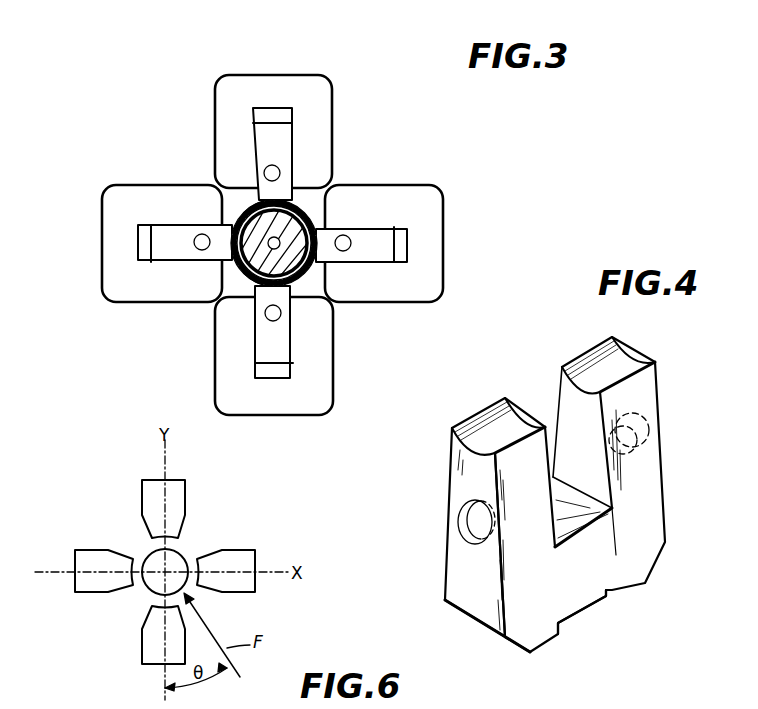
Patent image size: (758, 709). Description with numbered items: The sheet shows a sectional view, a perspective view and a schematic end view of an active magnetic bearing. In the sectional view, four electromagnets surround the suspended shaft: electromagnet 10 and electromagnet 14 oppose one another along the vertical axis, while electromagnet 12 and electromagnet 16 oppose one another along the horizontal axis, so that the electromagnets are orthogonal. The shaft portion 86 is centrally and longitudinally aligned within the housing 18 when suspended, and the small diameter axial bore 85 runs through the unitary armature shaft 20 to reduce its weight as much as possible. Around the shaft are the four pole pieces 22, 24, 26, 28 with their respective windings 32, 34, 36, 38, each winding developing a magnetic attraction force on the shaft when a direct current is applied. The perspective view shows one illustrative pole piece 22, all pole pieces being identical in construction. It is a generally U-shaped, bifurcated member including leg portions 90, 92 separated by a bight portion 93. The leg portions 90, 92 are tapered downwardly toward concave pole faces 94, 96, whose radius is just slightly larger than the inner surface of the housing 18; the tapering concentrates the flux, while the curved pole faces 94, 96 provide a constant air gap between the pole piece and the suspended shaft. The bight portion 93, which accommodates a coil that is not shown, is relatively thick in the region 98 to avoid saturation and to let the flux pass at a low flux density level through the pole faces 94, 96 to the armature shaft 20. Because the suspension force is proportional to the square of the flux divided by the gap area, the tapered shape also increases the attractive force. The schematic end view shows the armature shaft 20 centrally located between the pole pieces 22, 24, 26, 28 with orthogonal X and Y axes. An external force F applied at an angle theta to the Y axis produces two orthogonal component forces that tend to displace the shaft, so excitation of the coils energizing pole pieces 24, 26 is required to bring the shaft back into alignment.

In FIG. 3, the electromagnet 10 is at (268, 72).
In FIG. 3, the electromagnet 12 is at (448, 268).
In FIG. 3, the electromagnet 14 is at (275, 418).
In FIG. 3, the electromagnet 16 is at (101, 257).
In FIG. 3, the housing 18 is at (302, 210).
In FIG. 3, the armature shaft 20 is at (305, 278).
In FIG. 6, the armature shaft 20 is at (183, 553).
In FIG. 3, the pole piece 22 is at (283, 143).
In FIG. 4, the pole piece 22 is at (648, 508).
In FIG. 6, the pole piece 22 is at (176, 495).
In FIG. 3, the pole piece 24 is at (383, 228).
In FIG. 6, the pole piece 24 is at (243, 555).
In FIG. 3, the pole piece 26 is at (287, 347).
In FIG. 6, the pole piece 26 is at (148, 640).
In FIG. 3, the pole piece 28 is at (157, 253).
In FIG. 6, the pole piece 28 is at (103, 555).
In FIG. 3, the winding 32 is at (318, 92).
In FIG. 3, the winding 34 is at (433, 212).
In FIG. 3, the winding 36 is at (322, 395).
In FIG. 3, the winding 38 is at (112, 197).
In FIG. 3, the small diameter axial bore 85 is at (240, 208).
In FIG. 3, the shaft portion 86 is at (240, 278).
In FIG. 4, the leg portion 90 is at (460, 483).
In FIG. 4, the leg portion 92 is at (562, 385).
In FIG. 4, the bight portion 93 is at (603, 500).
In FIG. 4, the pole face 94 is at (490, 415).
In FIG. 4, the pole face 96 is at (607, 350).
In FIG. 4, the thick region 98 is at (592, 597).